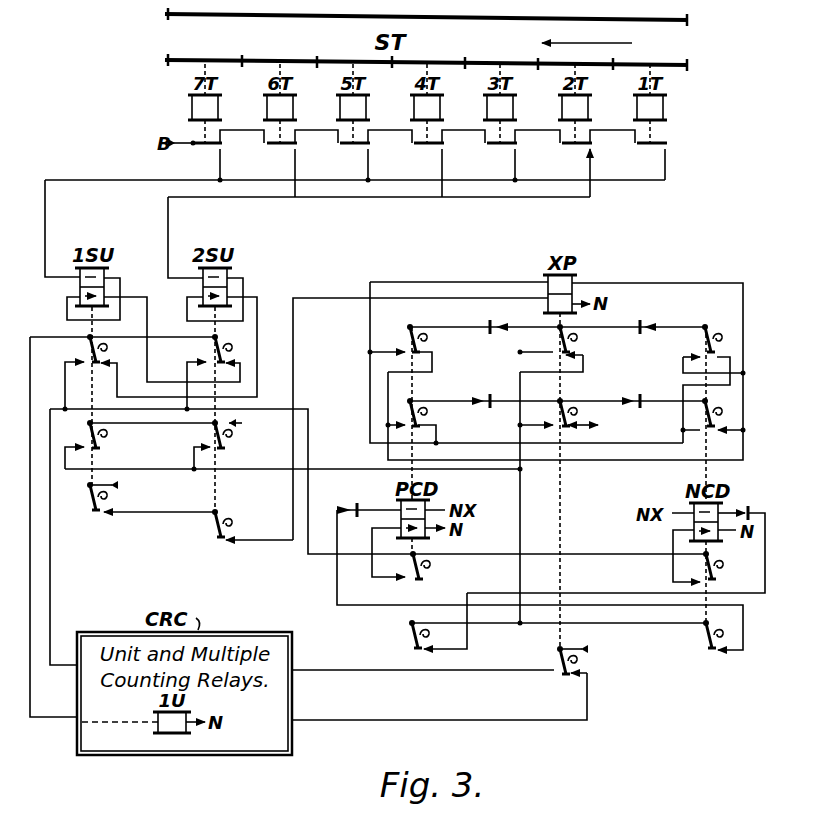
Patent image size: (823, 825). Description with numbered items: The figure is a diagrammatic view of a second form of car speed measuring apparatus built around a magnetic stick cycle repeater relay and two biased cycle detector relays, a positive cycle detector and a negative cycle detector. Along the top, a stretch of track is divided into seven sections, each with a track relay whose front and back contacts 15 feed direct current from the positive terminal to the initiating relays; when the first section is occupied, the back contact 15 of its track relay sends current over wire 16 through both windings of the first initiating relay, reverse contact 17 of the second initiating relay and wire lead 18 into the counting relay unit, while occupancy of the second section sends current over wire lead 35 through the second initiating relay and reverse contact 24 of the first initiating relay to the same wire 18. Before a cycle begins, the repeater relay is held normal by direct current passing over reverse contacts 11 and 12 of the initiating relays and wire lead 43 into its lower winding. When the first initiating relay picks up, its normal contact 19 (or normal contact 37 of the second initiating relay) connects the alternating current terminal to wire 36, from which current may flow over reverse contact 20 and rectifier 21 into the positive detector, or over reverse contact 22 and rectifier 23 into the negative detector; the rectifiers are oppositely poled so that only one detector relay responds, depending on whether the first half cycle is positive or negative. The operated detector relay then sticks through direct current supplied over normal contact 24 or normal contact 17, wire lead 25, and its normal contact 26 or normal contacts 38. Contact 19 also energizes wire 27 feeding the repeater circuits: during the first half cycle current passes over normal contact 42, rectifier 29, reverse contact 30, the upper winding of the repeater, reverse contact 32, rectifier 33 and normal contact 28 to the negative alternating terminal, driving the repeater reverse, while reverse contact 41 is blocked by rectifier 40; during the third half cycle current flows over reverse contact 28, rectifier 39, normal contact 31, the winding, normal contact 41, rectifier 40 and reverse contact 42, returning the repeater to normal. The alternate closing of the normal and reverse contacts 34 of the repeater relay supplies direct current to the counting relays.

The reverse contact of relay 1SU 11 is at (88, 509).
The reverse contact of relay 2SU 12 is at (212, 525).
The track relay contacts 15 is at (356, 163).
The wire 16 is at (46, 210).
The contact of relay 2SU 17 is at (212, 342).
The wire lead 18 is at (49, 337).
The normal contact of relay 1SU 19 is at (87, 427).
The reverse contact of relay NCD 20 is at (704, 633).
The rectifier 21 is at (357, 503).
The reverse contact of relay PCD 22 is at (410, 627).
The rectifier 23 is at (751, 512).
The contact of relay 1SU 24 is at (86, 349).
The wire lead 25 is at (310, 425).
The normal contact of relay PCD 26 is at (424, 578).
The wire 27 is at (518, 427).
The contact of relay XP 28 is at (567, 337).
The rectifier 29 is at (641, 398).
The reverse contact of relay NCD 30 is at (710, 406).
The normal contact of relay PCD 31 is at (408, 330).
The reverse contact of relay NCD 32 is at (703, 333).
The rectifier 33 is at (642, 325).
The normal and reverse contacts of relay XP 34 is at (557, 662).
The wire lead 35 is at (164, 210).
The wire 36 is at (521, 500).
The normal contact of relay 2SU 37 is at (212, 429).
The normal contacts of relay NCD 38 is at (713, 579).
The rectifier 39 is at (487, 327).
The rectifier 40 is at (498, 384).
The contact of relay PCD 41 is at (420, 407).
The contact of relay XP 42 is at (567, 411).
The wire lead 43 is at (352, 296).